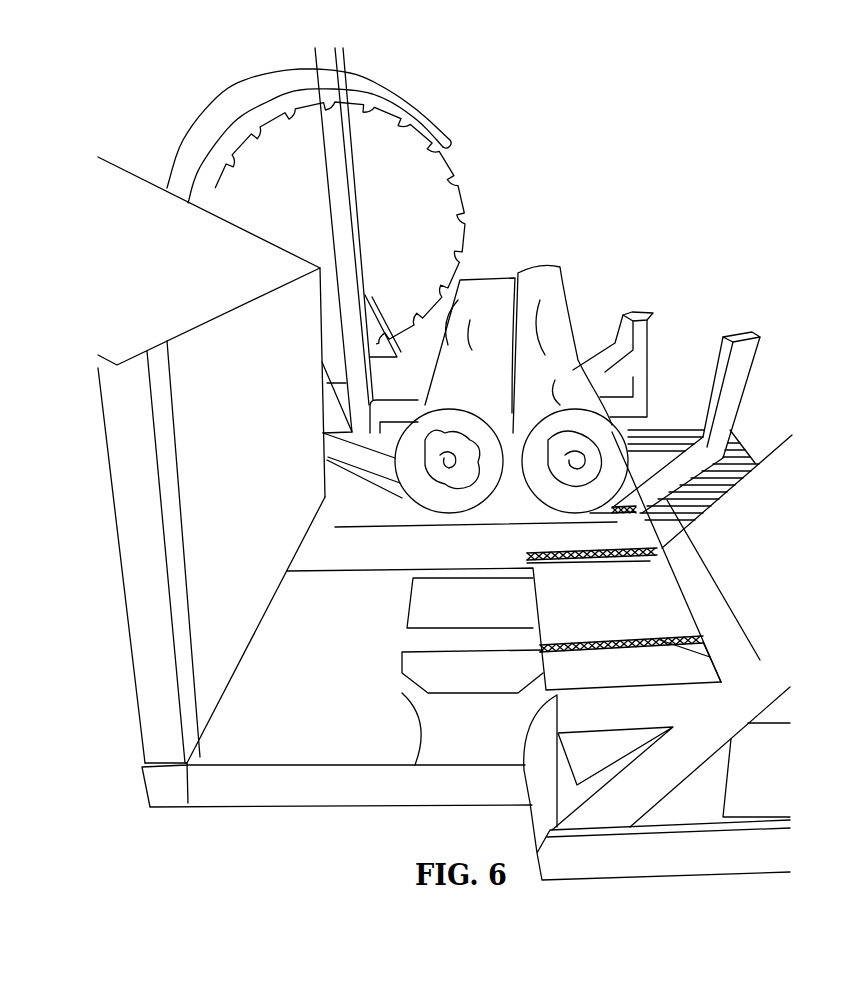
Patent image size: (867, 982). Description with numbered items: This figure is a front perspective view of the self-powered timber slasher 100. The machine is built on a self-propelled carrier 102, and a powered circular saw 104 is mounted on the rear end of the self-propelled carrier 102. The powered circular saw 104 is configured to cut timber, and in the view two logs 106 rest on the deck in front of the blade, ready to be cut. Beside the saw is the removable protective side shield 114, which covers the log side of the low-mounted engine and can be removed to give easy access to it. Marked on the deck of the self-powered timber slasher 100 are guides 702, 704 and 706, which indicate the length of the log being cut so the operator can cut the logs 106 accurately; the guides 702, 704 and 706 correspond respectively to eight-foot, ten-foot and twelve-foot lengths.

The self-powered timber slasher 100 is at (568, 126).
The self-propelled carrier 102 is at (295, 743).
The powered circular saw 104 is at (426, 233).
The logs 106 is at (543, 315).
The removable protective side shield 114 is at (198, 300).
The guide 702 is at (683, 522).
The guide 704 is at (680, 567).
The guide 706 is at (700, 655).